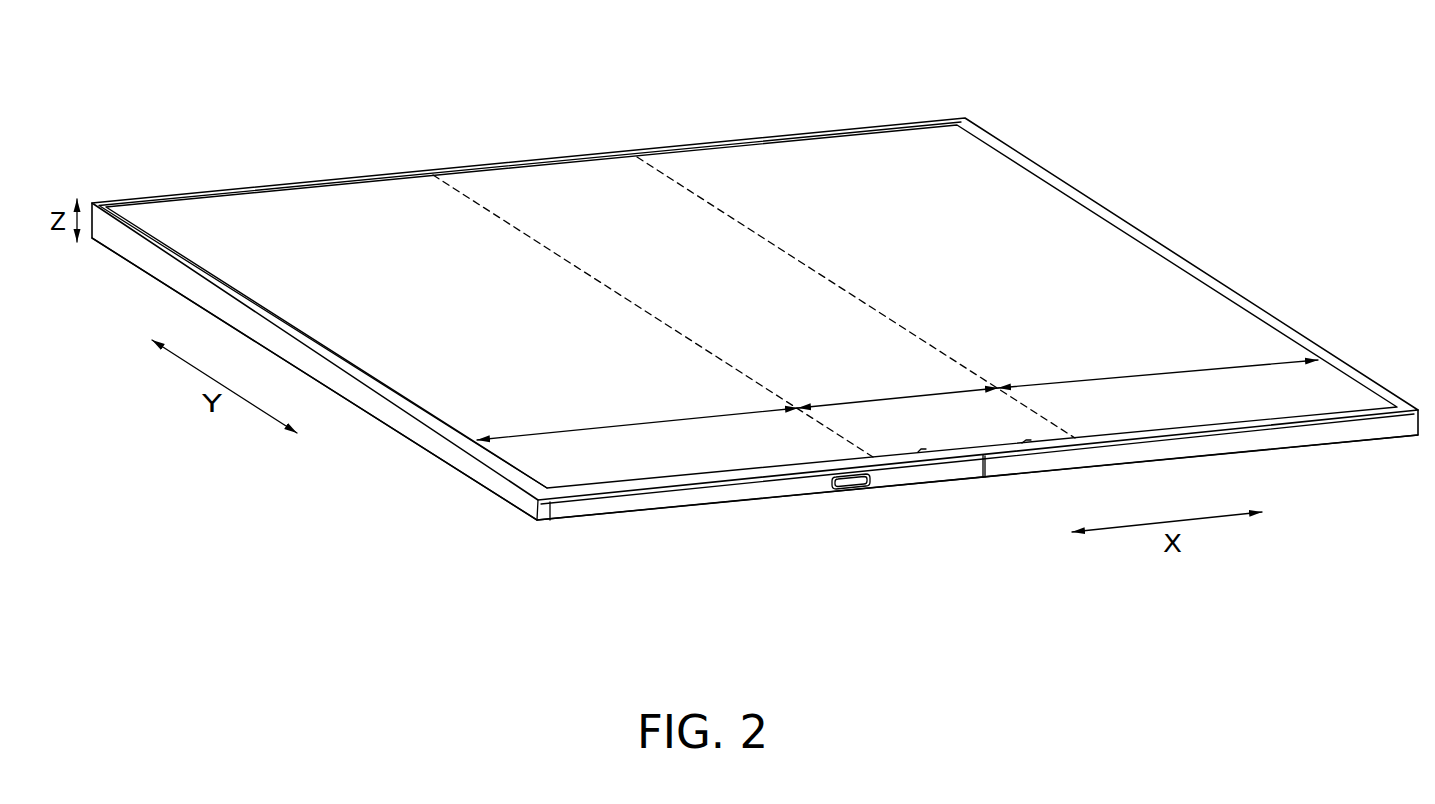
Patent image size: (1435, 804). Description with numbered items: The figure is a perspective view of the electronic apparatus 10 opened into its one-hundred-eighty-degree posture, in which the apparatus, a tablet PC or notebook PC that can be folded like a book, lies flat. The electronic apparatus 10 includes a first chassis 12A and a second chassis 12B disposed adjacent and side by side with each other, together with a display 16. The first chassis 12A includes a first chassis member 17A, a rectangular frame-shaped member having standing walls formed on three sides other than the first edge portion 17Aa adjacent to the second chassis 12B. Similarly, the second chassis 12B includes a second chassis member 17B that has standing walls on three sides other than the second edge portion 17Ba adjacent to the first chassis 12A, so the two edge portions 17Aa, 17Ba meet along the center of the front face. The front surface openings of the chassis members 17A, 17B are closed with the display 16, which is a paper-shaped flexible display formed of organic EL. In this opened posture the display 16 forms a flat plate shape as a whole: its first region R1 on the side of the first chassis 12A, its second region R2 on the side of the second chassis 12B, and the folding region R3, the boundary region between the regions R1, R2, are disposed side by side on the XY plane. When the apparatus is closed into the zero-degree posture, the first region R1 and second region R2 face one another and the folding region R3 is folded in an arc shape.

The electronic apparatus 10 is at (137, 103).
The display 16 is at (990, 188).
The first chassis member 17A is at (583, 513).
The second chassis member 17B is at (1377, 435).
The first chassis 12A is at (690, 521).
The second chassis 12B is at (1313, 460).
The first edge portion 17Aa is at (987, 467).
The second edge portion 17Ba is at (982, 476).
The first region R1 is at (637, 418).
The second region R2 is at (1158, 366).
The folding region R3 is at (898, 390).